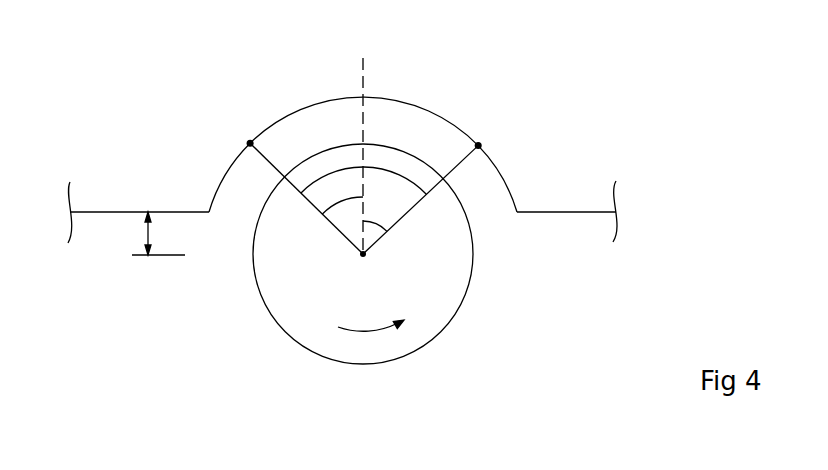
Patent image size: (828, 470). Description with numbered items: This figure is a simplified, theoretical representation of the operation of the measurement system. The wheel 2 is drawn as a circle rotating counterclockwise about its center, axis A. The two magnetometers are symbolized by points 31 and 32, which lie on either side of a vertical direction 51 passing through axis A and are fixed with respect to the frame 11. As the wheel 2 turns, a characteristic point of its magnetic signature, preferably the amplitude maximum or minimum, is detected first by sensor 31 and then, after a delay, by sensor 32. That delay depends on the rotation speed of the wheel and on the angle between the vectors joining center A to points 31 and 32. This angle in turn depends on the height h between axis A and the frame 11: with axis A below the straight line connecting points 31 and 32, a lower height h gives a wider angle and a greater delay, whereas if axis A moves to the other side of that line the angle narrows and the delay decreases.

The wheel 2 is at (448, 302).
The frame 11 is at (553, 212).
The magnetometer 31 is at (479, 145).
The magnetometer 32 is at (250, 143).
The vertical direction 51 is at (365, 127).
The center of the wheel A is at (362, 268).
The height h is at (156, 233).